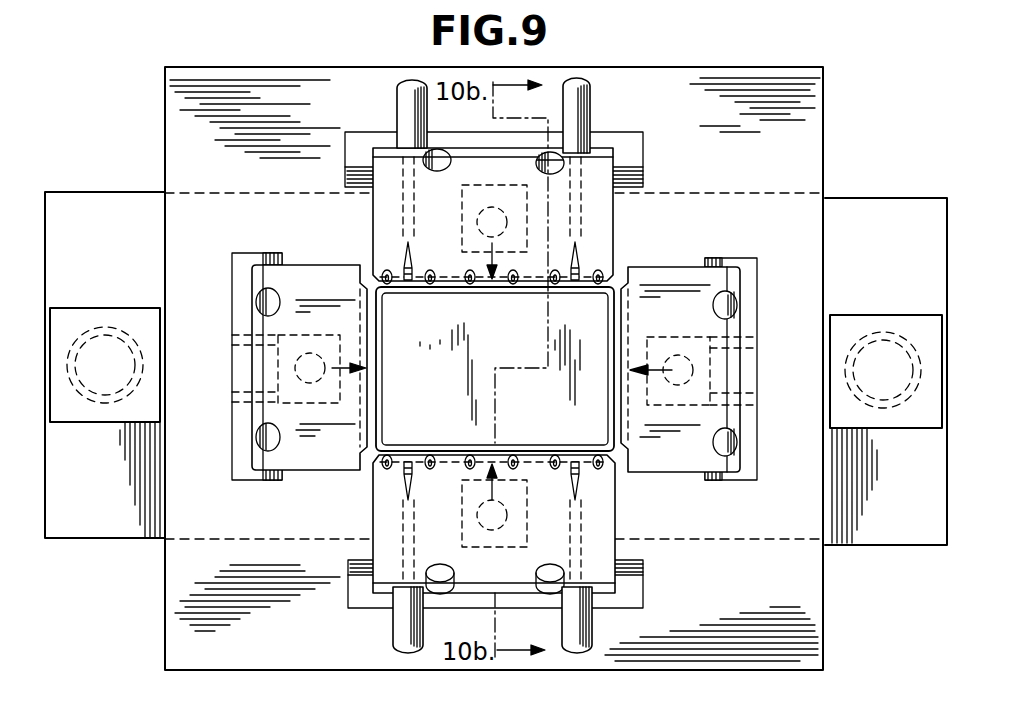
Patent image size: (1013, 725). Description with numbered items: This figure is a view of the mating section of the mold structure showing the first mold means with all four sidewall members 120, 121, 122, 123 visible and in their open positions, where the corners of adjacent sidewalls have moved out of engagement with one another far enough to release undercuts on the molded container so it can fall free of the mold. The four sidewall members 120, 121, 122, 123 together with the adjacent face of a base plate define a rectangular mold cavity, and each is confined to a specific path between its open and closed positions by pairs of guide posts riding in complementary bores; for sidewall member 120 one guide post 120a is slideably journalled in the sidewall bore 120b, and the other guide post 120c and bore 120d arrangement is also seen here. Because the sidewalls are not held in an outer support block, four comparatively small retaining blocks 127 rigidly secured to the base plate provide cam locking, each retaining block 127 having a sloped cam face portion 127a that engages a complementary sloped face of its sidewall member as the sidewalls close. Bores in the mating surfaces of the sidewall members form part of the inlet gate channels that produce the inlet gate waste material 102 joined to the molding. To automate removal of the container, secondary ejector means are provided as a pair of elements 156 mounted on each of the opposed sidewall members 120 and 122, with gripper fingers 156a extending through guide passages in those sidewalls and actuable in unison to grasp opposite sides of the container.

The inlet gate waste material 102 is at (470, 292).
The sidewall member 120 is at (603, 243).
The guide post 120a is at (438, 166).
The sidewall bore 120b is at (423, 142).
The guide post 120c is at (555, 168).
The bore 120d is at (560, 157).
The sidewall member 121 is at (314, 265).
The sidewall member 122 is at (605, 525).
The sidewall member 123 is at (700, 312).
The retaining block 127 is at (605, 135).
The sloped cam face portion 127a is at (640, 188).
The secondary ejector element 156 is at (411, 82).
The gripper finger 156a is at (410, 282).